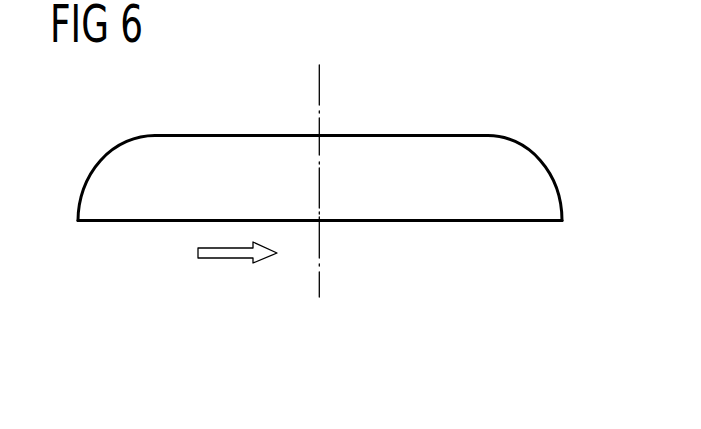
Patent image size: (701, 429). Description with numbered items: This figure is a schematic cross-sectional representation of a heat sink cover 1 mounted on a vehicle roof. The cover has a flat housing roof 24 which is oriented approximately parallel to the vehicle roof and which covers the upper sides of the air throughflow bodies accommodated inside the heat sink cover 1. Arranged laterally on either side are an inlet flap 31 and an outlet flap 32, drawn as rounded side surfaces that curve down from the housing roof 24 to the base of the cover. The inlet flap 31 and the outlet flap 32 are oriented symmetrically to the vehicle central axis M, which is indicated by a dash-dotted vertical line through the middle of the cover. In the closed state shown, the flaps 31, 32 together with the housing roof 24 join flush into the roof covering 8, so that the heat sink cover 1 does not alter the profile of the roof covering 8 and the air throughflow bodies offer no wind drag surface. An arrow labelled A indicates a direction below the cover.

The heat sink cover 1 is at (320, 131).
The inlet flap 31 is at (100, 162).
The outlet flap 32 is at (540, 158).
The housing roof 24 is at (321, 102).
The roof covering 8 is at (422, 135).
The vehicle central axis M is at (318, 85).
The direction of movement A is at (228, 252).